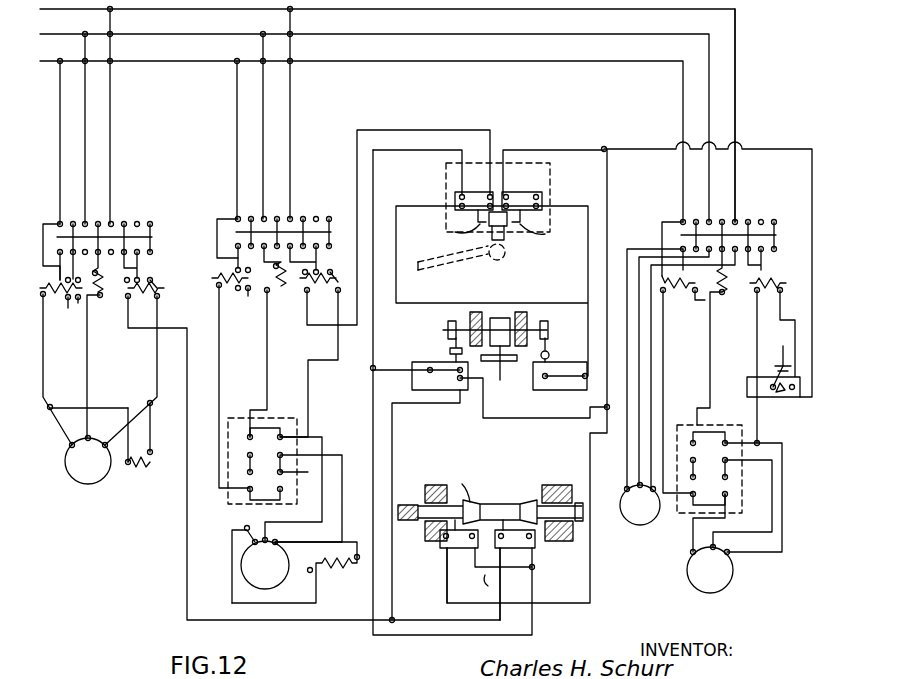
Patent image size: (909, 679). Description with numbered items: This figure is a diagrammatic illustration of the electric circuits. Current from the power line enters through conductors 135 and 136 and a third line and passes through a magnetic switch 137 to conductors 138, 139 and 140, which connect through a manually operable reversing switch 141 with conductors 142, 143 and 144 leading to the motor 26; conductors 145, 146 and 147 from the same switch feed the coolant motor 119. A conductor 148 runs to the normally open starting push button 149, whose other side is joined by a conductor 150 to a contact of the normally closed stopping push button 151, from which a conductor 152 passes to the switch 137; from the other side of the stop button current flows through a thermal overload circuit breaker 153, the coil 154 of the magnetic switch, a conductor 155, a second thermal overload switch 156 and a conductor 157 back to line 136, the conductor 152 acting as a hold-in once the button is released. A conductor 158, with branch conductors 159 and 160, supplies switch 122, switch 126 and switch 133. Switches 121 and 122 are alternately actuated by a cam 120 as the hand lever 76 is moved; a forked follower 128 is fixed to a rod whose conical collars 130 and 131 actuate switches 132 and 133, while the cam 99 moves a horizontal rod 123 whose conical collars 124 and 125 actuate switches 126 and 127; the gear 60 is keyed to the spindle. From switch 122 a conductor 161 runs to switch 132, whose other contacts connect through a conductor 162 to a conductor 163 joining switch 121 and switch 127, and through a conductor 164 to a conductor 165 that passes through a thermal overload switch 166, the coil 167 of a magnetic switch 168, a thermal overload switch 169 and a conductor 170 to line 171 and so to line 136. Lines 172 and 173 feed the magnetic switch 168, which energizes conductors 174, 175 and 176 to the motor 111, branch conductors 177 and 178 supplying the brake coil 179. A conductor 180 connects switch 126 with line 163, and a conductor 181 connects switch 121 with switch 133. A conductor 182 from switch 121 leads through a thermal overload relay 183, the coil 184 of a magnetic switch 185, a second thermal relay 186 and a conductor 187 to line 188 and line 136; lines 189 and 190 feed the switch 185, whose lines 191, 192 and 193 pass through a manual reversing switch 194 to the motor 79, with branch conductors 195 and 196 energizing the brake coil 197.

The conductor 135 is at (55, 14).
The conductor 136 is at (55, 40).
The line 171 is at (60, 115).
The line 172 is at (85, 140).
The line 173 is at (110, 145).
The line 188 is at (237, 138).
The line 189 is at (290, 88).
The line 190 is at (290, 135).
The magnetic switch 168 is at (150, 218).
The conductor 170 is at (43, 228).
The thermal overload switch 169 is at (60, 302).
The coil 167 is at (100, 300).
The thermal overload switch 166 is at (150, 276).
The conductor 174 is at (43, 390).
The conductor 175 is at (87, 385).
The conductor 176 is at (157, 360).
The branch conductor 178 is at (150, 440).
The branch conductor 177 is at (124, 470).
The coil 179 is at (146, 470).
The motor 111 is at (88, 460).
The magnetic switch 185 is at (322, 216).
The conductor 187 is at (217, 230).
The second thermal relay 186 is at (232, 294).
The coil 184 is at (278, 292).
The thermal overload relay 183 is at (345, 266).
The line 191 is at (219, 400).
The line 192 is at (267, 388).
The line 193 is at (340, 348).
The manual reversing switch 194 is at (248, 505).
The branch conductor 195 is at (232, 570).
The branch conductor 196 is at (357, 535).
The coil 197 is at (312, 575).
The motor 79 is at (265, 564).
The conductor 182 is at (470, 118).
The conductor 163 is at (373, 385).
The conductor 161 is at (550, 200).
The switch 121 is at (461, 238).
The switch 122 is at (545, 238).
The cam 120 is at (503, 259).
The hand lever 76 is at (455, 262).
The conductor 181 is at (588, 300).
The forked follower 128 is at (510, 312).
The conical collar 130 is at (456, 326).
The conical collar 131 is at (547, 328).
The gear 60 is at (500, 380).
The switch 132 is at (428, 354).
The switch 133 is at (562, 362).
The conductor 162 is at (410, 378).
The conductor 164 is at (392, 440).
The branch conductor 160 is at (588, 404).
The horizontal rod 123 is at (500, 500).
The cam 99 is at (455, 478).
The conical collar 125 is at (535, 478).
The conical collar 124 is at (461, 479).
The switch 126 is at (452, 550).
The switch 127 is at (535, 540).
The conductor 180 is at (492, 588).
The conductor 165 is at (392, 615).
The branch conductor 159 is at (607, 185).
The conductor 158 is at (790, 149).
The magnetic switch 137 is at (735, 222).
The conductor 148 is at (761, 222).
The conductor 157 is at (662, 240).
The conductor 145 is at (627, 455).
The conductor 146 is at (639, 472).
The conductor 147 is at (651, 488).
The motor 119 is at (640, 504).
The conductor 155 is at (672, 296).
The second thermal overload switch 156 is at (670, 320).
The conductor 138 is at (663, 360).
The coil 154 is at (712, 300).
The conductor 139 is at (710, 370).
The thermal overload circuit breaker 153 is at (775, 283).
The conductor 140 is at (752, 425).
The conductor 150 is at (770, 385).
The conductor 152 is at (770, 393).
The starting push button 149 is at (786, 358).
The stopping push button 151 is at (792, 398).
The reversing switch 141 is at (677, 515).
The conductor 142 is at (727, 518).
The conductor 143 is at (730, 532).
The conductor 144 is at (760, 556).
The motor 26 is at (710, 569).